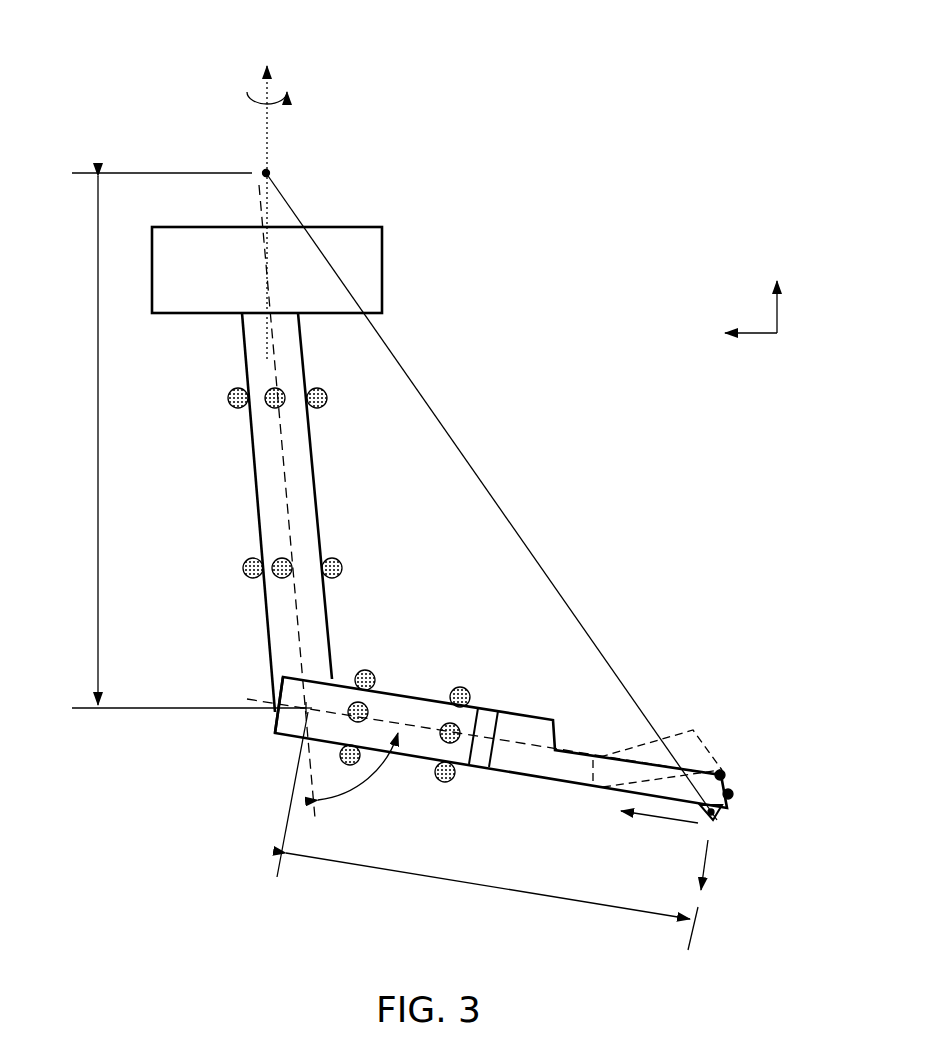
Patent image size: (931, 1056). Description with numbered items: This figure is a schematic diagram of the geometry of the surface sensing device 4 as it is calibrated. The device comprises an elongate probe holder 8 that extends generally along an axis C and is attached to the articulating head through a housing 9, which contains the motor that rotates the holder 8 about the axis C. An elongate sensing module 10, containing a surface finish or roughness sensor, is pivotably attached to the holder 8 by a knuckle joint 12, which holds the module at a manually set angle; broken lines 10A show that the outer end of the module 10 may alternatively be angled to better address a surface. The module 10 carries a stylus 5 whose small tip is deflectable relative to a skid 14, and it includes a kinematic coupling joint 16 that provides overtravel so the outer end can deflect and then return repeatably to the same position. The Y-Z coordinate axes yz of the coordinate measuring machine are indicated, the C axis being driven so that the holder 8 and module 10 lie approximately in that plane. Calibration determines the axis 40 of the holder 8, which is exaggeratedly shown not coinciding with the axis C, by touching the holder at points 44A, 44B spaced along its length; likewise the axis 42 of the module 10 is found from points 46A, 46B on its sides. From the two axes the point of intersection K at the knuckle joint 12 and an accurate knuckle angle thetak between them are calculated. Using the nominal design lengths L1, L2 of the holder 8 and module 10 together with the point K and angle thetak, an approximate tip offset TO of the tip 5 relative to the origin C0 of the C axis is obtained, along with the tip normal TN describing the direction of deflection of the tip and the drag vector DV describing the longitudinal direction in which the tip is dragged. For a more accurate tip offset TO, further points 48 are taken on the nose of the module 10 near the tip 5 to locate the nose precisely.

The surface sensing device 4 is at (496, 560).
The stylus 5 is at (713, 822).
The probe holder 8 is at (252, 462).
The housing 9 is at (382, 262).
The sensing module 10 is at (418, 697).
The angled outer end of module 10A is at (693, 730).
The knuckle joint 12 is at (262, 740).
The skid 14 is at (718, 821).
The kinematic coupling joint 16 is at (488, 769).
The axis of the elongate holder 40 is at (288, 522).
The axis of the elongate sensing module 42 is at (423, 728).
The contact points on holder 44A is at (217, 398).
The contact points on holder 44B is at (232, 568).
The contact points on sensing module 46A is at (366, 670).
The contact points on sensing module 46B is at (445, 783).
The further points on nose 48 is at (726, 776).
The axis C is at (305, 213).
The origin of axis C C0 is at (284, 175).
The point of intersection K is at (314, 702).
The tip offset TO is at (485, 488).
The knuckle angle thetak is at (358, 786).
The length of the elongate holder L1 is at (187, 440).
The length of the sensing module L2 is at (487, 831).
The drag vector DV is at (658, 820).
The tip normal TN is at (707, 863).
The Y-Z coordinate axes yz is at (742, 300).